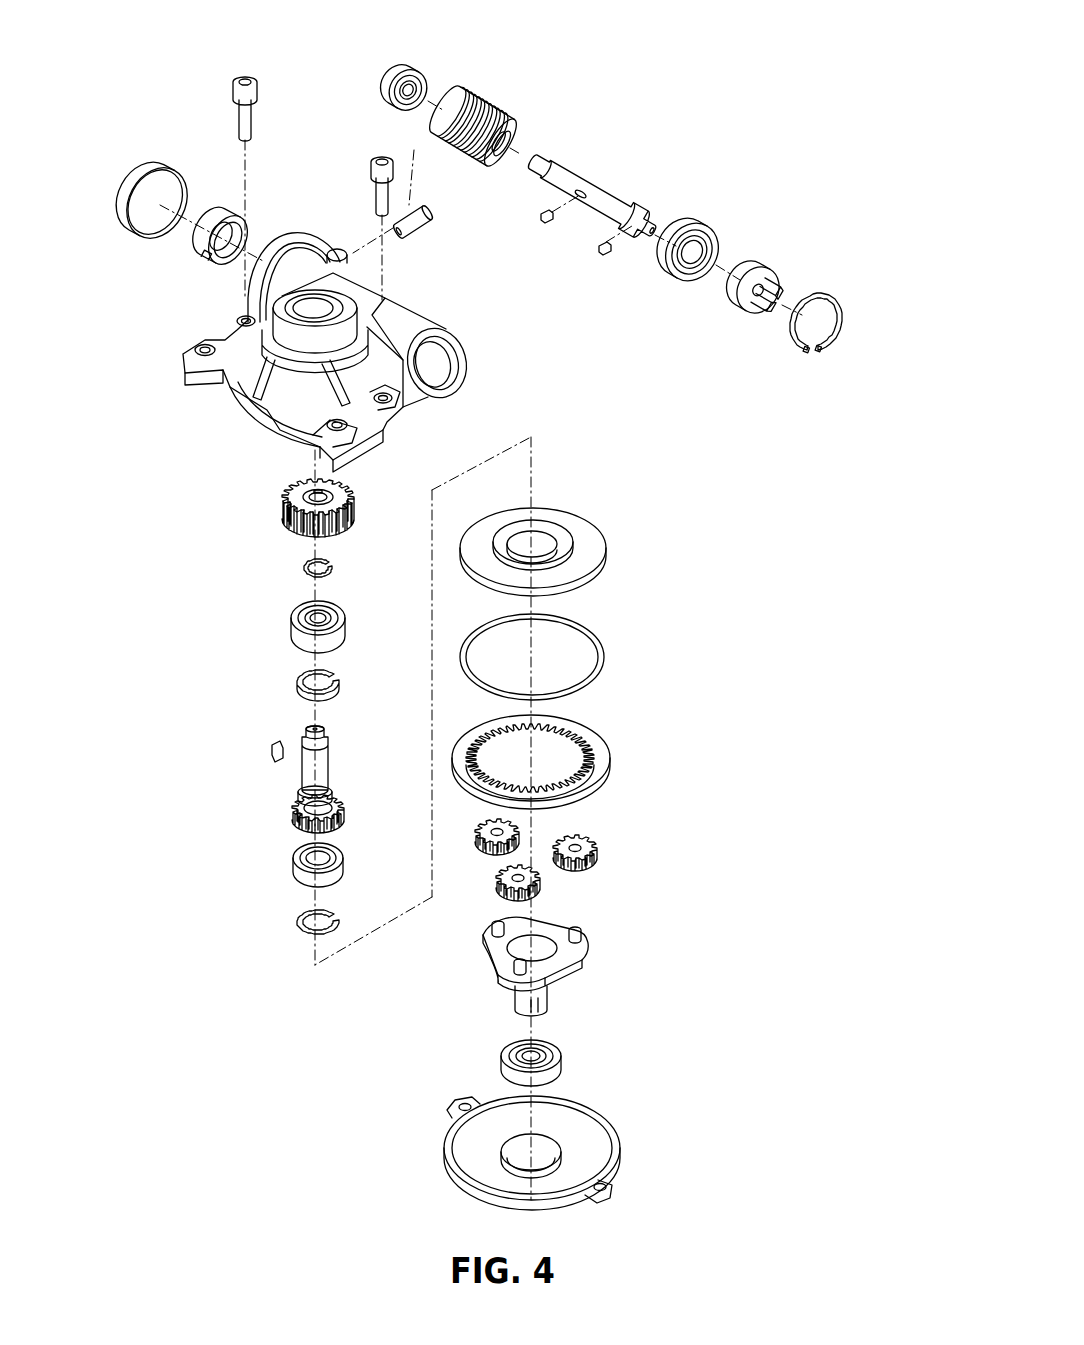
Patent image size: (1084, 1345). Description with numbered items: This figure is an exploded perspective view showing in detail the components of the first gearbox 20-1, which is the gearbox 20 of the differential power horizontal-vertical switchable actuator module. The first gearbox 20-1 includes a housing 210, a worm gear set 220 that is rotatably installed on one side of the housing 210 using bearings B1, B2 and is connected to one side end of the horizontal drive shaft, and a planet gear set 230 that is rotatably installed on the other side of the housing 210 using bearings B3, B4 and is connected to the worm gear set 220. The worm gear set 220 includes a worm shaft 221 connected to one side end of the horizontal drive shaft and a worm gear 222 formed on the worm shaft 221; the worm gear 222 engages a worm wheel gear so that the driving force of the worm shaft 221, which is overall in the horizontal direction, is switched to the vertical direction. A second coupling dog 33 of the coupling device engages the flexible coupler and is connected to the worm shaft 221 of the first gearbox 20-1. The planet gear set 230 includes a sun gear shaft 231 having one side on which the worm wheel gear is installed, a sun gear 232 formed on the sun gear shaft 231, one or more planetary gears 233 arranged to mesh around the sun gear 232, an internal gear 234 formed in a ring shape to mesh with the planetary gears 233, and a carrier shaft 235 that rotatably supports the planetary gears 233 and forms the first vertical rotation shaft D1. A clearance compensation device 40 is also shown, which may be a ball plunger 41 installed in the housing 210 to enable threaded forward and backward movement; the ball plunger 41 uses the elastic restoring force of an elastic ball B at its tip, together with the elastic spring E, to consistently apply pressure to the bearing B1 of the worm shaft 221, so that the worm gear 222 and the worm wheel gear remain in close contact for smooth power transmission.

The gearbox 20 is at (145, 940).
The first gearbox 20-1 is at (218, 860).
The second coupling dog 33 is at (780, 276).
The clearance compensation device 40 is at (500, 262).
The ball plunger 41 is at (432, 213).
The housing 210 is at (250, 410).
The worm gear set 220 is at (639, 231).
The worm shaft 221 is at (580, 173).
The worm gear 222 is at (495, 100).
The planet gear set 230 is at (440, 1055).
The sun gear shaft 231 is at (307, 770).
The sun gear 232 is at (300, 823).
The planetary gears 233 is at (510, 884).
The internal gear 234 is at (457, 780).
The carrier shaft 235 is at (500, 950).
The elastic ball B is at (395, 237).
The bearing B1 is at (427, 72).
The bearing B2 is at (702, 220).
The bearing B3 is at (290, 630).
The bearing B4 is at (556, 1068).
The first vertical rotation shaft D1 is at (548, 1006).
The elastic spring E is at (411, 135).